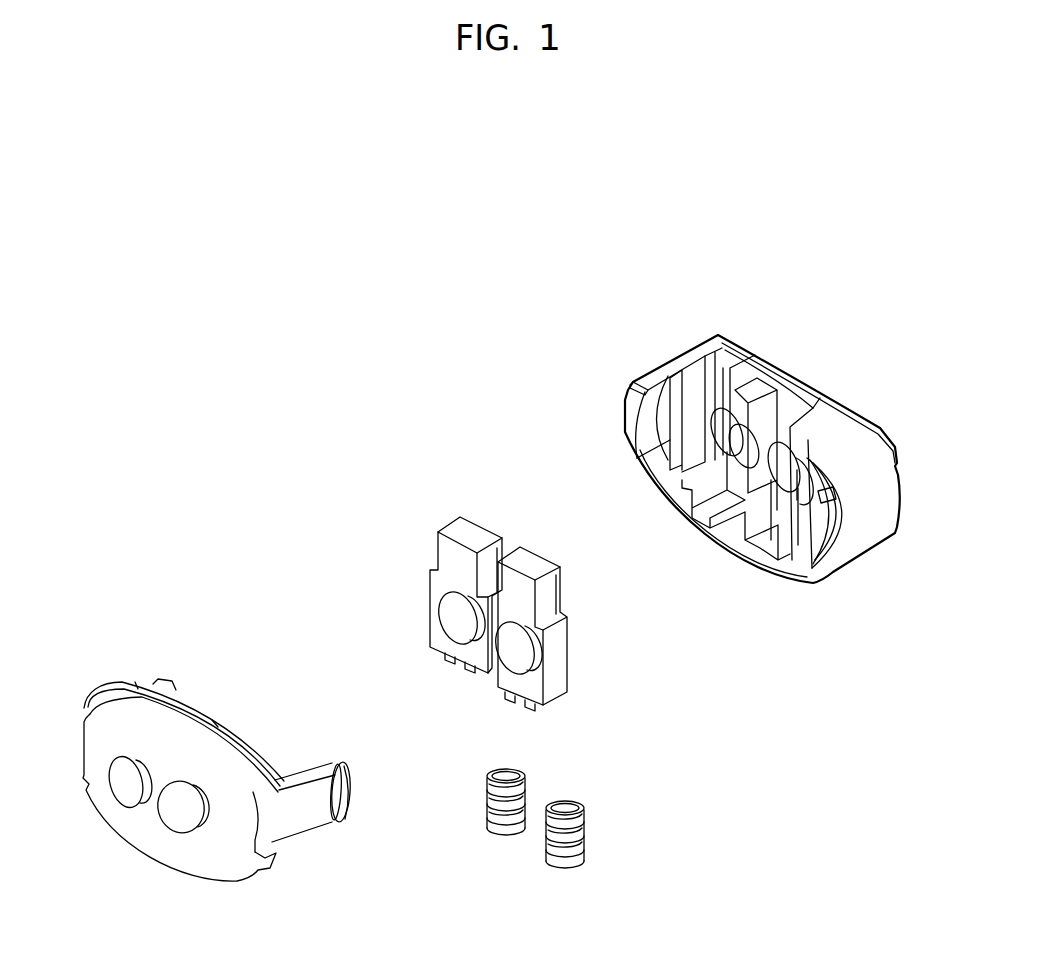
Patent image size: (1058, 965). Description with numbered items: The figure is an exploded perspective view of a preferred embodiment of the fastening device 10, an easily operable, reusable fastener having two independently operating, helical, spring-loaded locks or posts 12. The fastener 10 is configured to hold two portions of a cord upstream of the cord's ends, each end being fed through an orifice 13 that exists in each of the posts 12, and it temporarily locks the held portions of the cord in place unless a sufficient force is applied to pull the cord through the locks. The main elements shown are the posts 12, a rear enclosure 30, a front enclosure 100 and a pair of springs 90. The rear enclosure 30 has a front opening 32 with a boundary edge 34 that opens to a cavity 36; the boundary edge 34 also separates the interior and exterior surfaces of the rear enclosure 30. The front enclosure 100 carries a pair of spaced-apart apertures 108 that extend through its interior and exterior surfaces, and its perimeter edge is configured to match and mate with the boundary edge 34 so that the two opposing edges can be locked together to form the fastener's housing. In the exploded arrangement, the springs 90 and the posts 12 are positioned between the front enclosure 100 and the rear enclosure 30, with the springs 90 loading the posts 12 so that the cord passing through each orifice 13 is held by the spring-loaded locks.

The fastening device 10 is at (718, 300).
The rear enclosure 30 is at (833, 442).
The front opening 32 is at (785, 513).
The boundary edge 34 is at (697, 413).
The cavity 36 is at (815, 477).
The post 12 is at (470, 528).
The orifice 13 is at (460, 617).
The spring 90 is at (582, 865).
The front enclosure 100 is at (227, 857).
The aperture 108 is at (118, 783).